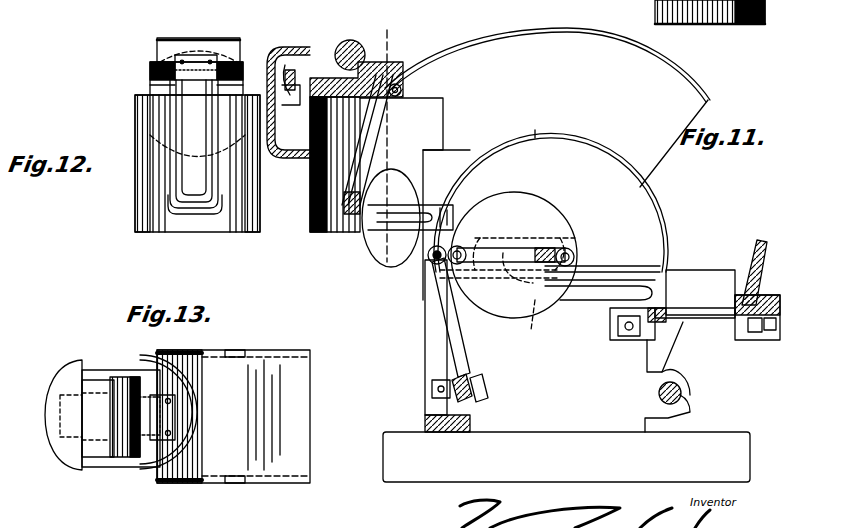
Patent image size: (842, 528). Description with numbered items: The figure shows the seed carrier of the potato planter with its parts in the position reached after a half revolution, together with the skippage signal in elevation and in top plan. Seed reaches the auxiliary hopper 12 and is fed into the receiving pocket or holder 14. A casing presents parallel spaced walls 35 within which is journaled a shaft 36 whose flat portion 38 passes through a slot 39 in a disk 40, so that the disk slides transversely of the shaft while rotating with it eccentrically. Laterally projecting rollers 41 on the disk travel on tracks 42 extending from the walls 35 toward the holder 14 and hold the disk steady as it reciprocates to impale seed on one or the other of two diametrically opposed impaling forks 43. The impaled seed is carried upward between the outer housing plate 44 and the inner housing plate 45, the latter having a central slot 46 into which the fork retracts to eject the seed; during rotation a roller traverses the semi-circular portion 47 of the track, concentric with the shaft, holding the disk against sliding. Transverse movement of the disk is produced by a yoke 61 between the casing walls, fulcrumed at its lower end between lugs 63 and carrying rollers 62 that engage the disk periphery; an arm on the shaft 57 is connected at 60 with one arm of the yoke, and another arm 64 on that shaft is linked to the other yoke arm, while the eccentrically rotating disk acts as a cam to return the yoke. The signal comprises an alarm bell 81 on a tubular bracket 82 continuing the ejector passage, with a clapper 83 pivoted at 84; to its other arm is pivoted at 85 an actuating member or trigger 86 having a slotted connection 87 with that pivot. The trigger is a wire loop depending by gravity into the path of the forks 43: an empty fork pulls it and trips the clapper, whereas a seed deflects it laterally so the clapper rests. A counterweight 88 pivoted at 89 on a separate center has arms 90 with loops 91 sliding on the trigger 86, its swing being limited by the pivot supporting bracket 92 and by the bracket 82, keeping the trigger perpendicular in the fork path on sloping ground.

In FIG. 11, the auxiliary hopper 12 is at (393, 262).
In FIG. 11, the receiving pocket or holder 14 is at (717, 290).
In FIG. 11, the parallel spaced walls 35 is at (517, 242).
In FIG. 11, the shaft 36 is at (550, 245).
In FIG. 11, the flat portion 38 is at (560, 245).
In FIG. 11, the slot 39 is at (505, 248).
In FIG. 11, the disk 40 is at (524, 237).
In FIG. 11, the rollers 41 is at (575, 255).
In FIG. 11, the tracks 42 is at (618, 268).
In FIG. 11, the impaling forks 43 is at (425, 200).
In FIG. 13, the outer housing plate 44 is at (233, 416).
In FIG. 11, the outer housing plate 44 is at (632, 52).
In FIG. 11, the inner housing plate 45 is at (612, 156).
In FIG. 11, the central slot 46 is at (534, 124).
In FIG. 11, the semi-circular portion 47 is at (537, 321).
In FIG. 11, the shaft 57 is at (692, 408).
In FIG. 11, the connection 60 is at (430, 285).
In FIG. 11, the yoke 61 is at (462, 348).
In FIG. 11, the rollers 62 is at (428, 262).
In FIG. 11, the lugs 63 is at (486, 394).
In FIG. 11, the arm 64 is at (668, 366).
In FIG. 12, the alarm bell 81 is at (172, 206).
In FIG. 13, the alarm bell 81 is at (72, 466).
In FIG. 11, the alarm bell 81 is at (292, 50).
In FIG. 12, the tubular bracket 82 is at (142, 218).
In FIG. 11, the tubular bracket 82 is at (310, 220).
In FIG. 13, the clapper 83 is at (95, 419).
In FIG. 11, the clapper 83 is at (312, 78).
In FIG. 12, the pivot 84 is at (160, 84).
In FIG. 11, the pivot 85 is at (404, 90).
In FIG. 11, the actuating member or trigger 86 is at (372, 153).
In FIG. 11, the slotted connection 87 is at (400, 98).
In FIG. 12, the counterweight 88 is at (232, 40).
In FIG. 13, the counterweight 88 is at (125, 458).
In FIG. 11, the counterweight 88 is at (352, 40).
In FIG. 12, the pivot 89 is at (240, 60).
In FIG. 13, the pivot 89 is at (152, 445).
In FIG. 11, the pivot 89 is at (410, 62).
In FIG. 11, the arms 90 is at (370, 145).
In FIG. 12, the loops 91 is at (212, 210).
In FIG. 11, the loops 91 is at (410, 208).
In FIG. 13, the pivot supporting bracket 92 is at (100, 370).
In FIG. 11, the pivot supporting bracket 92 is at (375, 62).